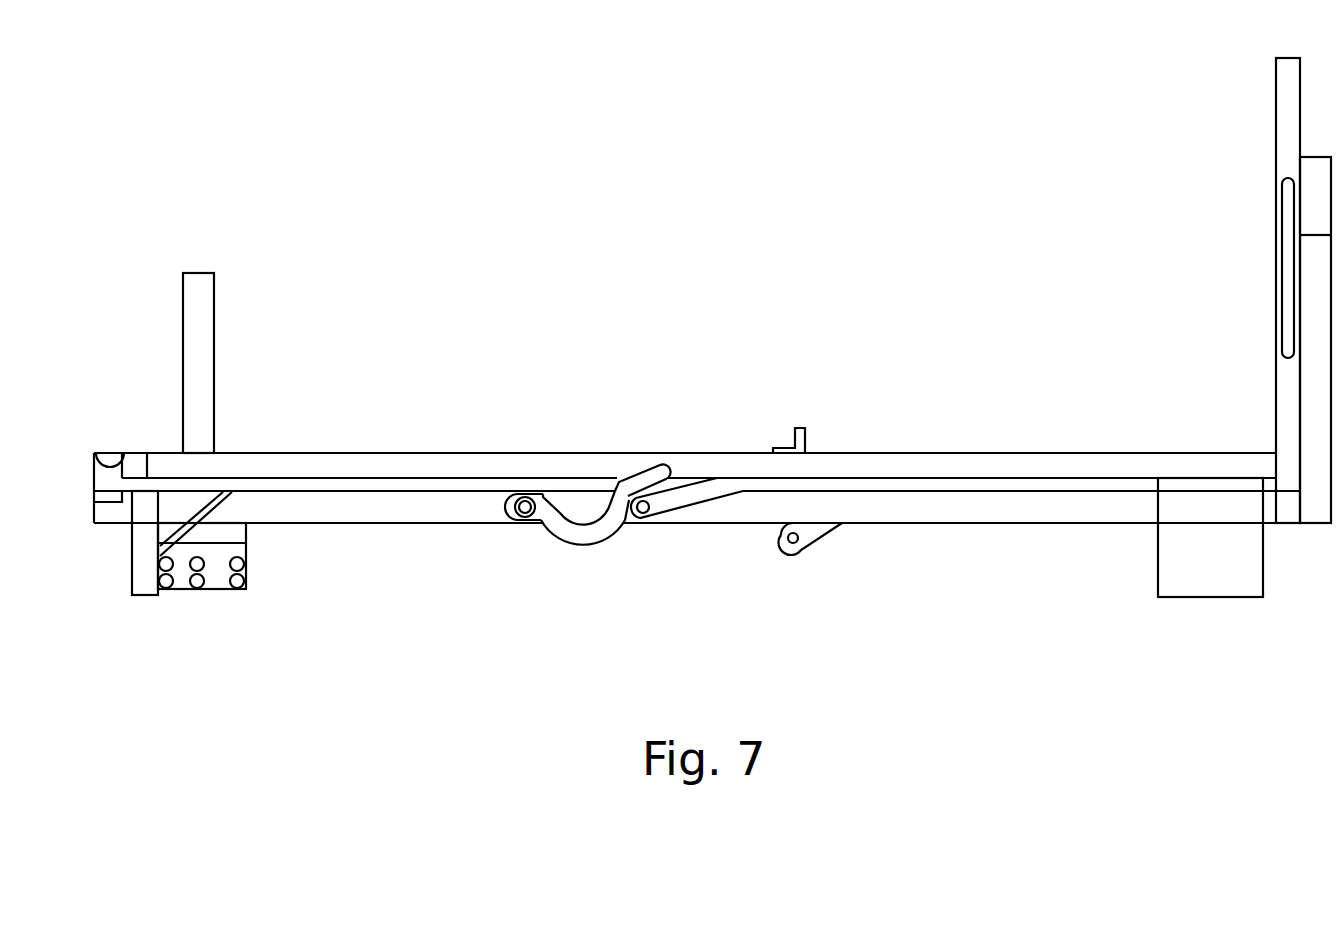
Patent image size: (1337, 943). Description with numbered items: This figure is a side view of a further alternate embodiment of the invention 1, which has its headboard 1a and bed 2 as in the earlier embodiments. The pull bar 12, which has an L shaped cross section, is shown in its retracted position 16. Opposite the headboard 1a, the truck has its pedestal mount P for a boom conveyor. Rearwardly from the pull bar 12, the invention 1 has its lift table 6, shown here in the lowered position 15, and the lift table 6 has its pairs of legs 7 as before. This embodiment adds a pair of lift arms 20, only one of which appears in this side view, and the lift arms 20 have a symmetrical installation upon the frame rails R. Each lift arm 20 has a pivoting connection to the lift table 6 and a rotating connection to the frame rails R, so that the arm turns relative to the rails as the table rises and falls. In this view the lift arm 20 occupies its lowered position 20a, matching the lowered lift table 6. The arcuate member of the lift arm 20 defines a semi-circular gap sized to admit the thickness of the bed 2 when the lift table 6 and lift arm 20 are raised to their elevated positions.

The invention 1 is at (1172, 80).
The headboard 1a is at (1275, 228).
The bed 2 is at (363, 454).
The pedestal mount P is at (182, 323).
The frame rails R is at (422, 510).
The pull bar 12 is at (798, 428).
The lowered position 15 is at (637, 482).
The retracted position 16 is at (833, 440).
The lift table 6 is at (642, 452).
The legs 7 is at (698, 512).
The lift arm 20 is at (607, 541).
The lowered position 20a is at (575, 563).